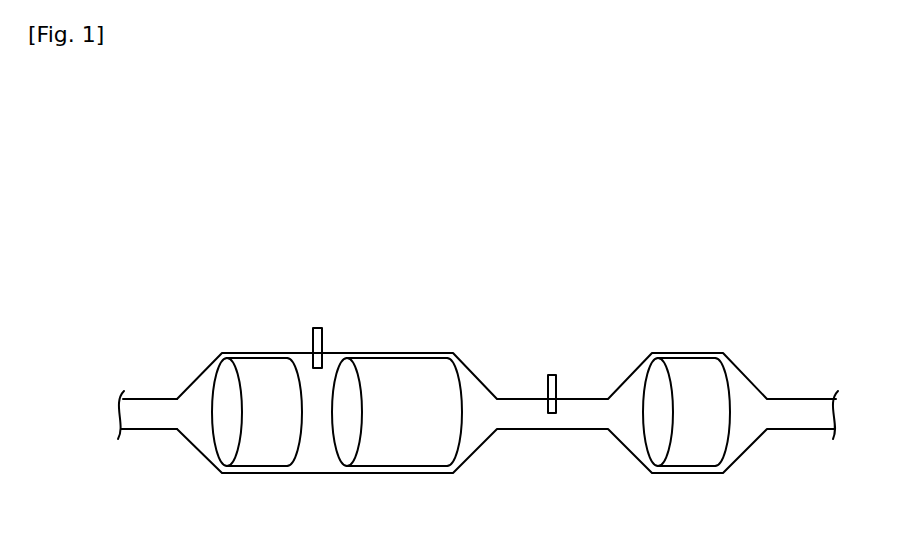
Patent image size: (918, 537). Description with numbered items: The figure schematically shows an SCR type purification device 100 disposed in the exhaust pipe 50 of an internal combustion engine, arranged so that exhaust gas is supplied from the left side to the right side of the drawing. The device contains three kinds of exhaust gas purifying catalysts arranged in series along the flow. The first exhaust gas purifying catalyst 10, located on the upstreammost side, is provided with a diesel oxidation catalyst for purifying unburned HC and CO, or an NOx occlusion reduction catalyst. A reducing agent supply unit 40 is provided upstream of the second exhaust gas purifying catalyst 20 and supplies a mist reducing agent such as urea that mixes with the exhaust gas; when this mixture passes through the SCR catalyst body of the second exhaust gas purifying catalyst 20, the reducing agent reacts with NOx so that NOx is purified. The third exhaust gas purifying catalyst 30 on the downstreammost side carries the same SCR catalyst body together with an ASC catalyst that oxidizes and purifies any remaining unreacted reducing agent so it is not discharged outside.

The SCR type purification device 100 is at (807, 219).
The first exhaust gas purifying catalyst 10 is at (258, 362).
The second exhaust gas purifying catalyst 20 is at (400, 366).
The third exhaust gas purifying catalyst 30 is at (690, 365).
The reducing agent supply unit 40 is at (316, 328).
The exhaust pipe 50 is at (141, 399).